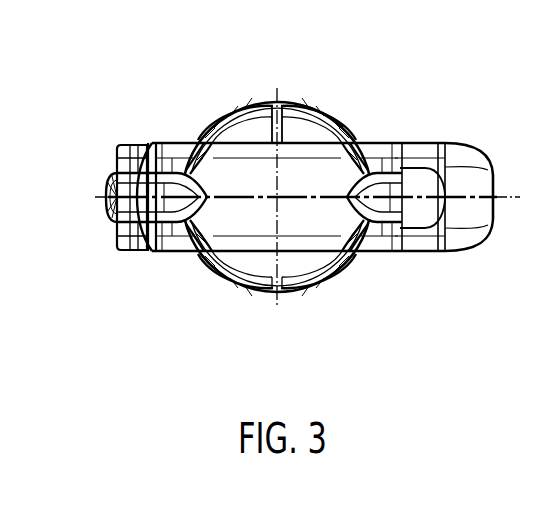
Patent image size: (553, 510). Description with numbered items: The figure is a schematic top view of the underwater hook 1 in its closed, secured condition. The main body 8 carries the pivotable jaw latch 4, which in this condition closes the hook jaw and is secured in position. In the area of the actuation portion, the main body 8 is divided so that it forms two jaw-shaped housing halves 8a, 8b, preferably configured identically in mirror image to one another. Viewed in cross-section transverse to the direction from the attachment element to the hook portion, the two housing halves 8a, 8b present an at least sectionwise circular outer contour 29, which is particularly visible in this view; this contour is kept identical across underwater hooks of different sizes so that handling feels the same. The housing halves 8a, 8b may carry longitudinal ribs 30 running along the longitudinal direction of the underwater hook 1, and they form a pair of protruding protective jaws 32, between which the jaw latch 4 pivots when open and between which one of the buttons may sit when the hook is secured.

The underwater hook 1 is at (492, 82).
The jaw latch 4 is at (107, 184).
The main body 8 is at (376, 157).
The housing half 8a is at (318, 290).
The housing half 8b is at (237, 103).
The outer contour 29 is at (340, 100).
The longitudinal ribs 30 is at (287, 104).
The protective jaws 32 is at (118, 144).